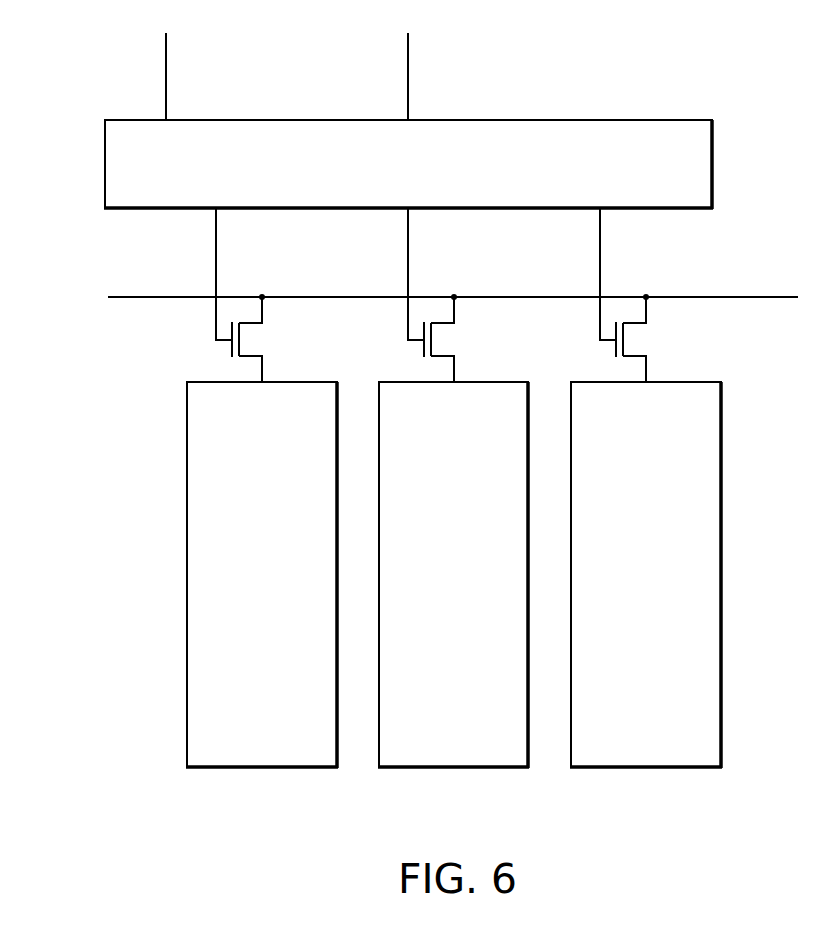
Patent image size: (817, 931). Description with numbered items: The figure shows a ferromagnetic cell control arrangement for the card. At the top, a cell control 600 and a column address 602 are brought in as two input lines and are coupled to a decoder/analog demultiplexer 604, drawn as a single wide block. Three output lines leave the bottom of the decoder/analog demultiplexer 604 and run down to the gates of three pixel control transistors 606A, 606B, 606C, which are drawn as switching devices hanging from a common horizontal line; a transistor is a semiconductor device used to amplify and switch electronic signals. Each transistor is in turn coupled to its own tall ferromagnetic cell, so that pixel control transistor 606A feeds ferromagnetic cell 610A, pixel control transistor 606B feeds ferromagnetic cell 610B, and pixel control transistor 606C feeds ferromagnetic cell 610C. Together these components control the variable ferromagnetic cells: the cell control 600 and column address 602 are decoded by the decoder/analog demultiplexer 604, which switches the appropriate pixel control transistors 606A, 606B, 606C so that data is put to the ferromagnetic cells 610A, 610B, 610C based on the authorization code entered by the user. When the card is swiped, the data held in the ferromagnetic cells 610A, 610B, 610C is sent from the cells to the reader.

The cell control 600 is at (166, 80).
The column address 602 is at (408, 80).
The decoder/analog demultiplexer 604 is at (712, 165).
The pixel control transistor 606A is at (252, 342).
The pixel control transistor 606B is at (444, 342).
The pixel control transistor 606C is at (636, 342).
The ferromagnetic cell 610A is at (254, 768).
The ferromagnetic cell 610B is at (454, 768).
The ferromagnetic cell 610C is at (642, 768).